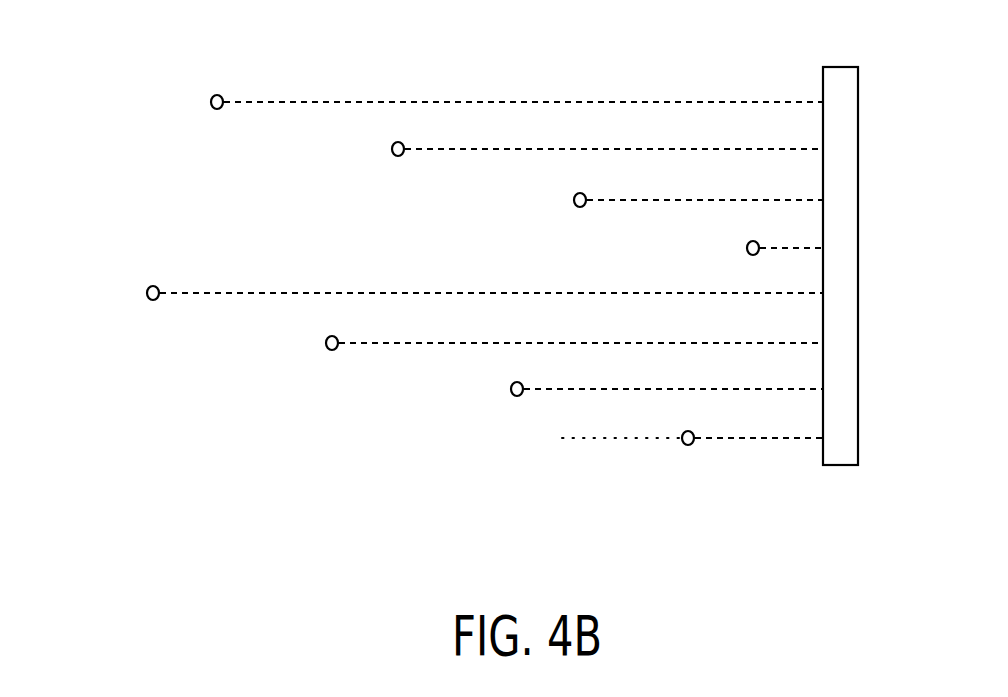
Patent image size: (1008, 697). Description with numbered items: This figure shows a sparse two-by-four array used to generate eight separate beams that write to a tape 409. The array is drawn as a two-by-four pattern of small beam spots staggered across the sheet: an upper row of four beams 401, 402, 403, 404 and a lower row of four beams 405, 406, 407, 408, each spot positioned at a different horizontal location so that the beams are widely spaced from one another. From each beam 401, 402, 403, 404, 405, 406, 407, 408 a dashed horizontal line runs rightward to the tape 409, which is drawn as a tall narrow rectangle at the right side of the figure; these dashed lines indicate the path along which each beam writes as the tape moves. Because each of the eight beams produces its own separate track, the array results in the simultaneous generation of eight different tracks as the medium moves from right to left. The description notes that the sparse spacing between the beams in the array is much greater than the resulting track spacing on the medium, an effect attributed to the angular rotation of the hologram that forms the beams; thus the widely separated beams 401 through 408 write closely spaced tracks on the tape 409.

The beam 401 is at (210, 98).
The beam 402 is at (391, 145).
The beam 403 is at (573, 196).
The beam 404 is at (746, 244).
The beam 405 is at (146, 289).
The beam 406 is at (325, 339).
The beam 407 is at (510, 385).
The beam 408 is at (681, 434).
The tape 409 is at (843, 66).